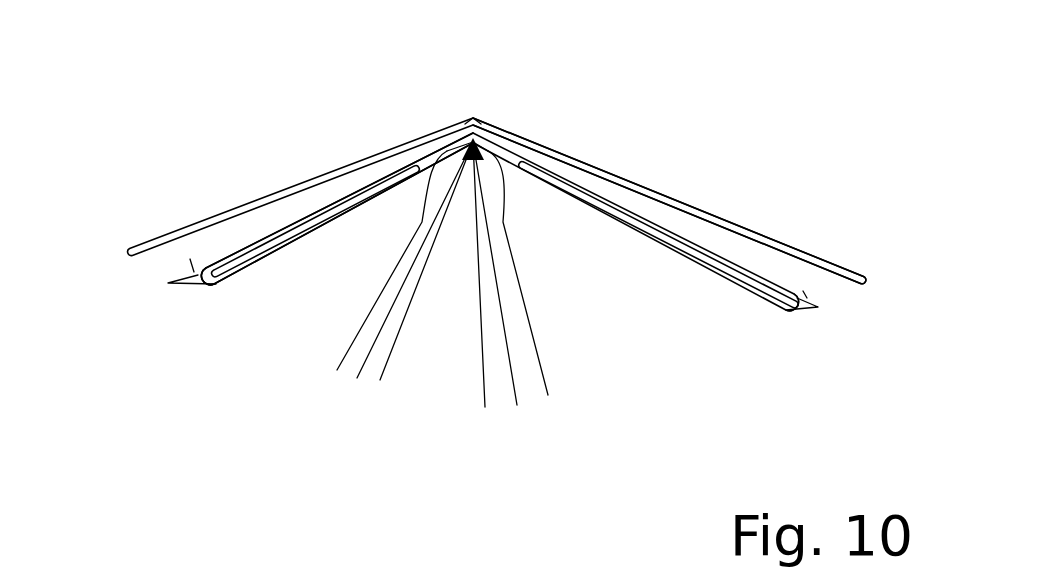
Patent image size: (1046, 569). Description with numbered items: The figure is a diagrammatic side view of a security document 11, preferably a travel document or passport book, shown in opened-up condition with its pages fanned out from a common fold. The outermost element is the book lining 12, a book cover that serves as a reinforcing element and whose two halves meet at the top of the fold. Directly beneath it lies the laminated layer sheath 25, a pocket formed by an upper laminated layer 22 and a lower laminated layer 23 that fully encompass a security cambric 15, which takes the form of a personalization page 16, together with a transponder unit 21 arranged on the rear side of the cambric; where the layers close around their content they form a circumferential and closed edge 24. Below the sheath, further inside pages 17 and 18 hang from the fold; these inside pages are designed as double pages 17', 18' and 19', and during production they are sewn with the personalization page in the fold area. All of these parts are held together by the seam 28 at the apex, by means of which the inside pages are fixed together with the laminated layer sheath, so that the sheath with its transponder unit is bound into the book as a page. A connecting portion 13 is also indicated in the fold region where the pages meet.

The security document 11 is at (327, 142).
The book lining 12 is at (765, 237).
The connecting portion 13 is at (380, 380).
The security cambric 15 is at (247, 298).
The personalization page 16 is at (257, 257).
The inside page 17 is at (351, 293).
The inside page 18 is at (392, 309).
The double page 17' is at (480, 320).
The double page 18' is at (525, 315).
The double page 19' is at (577, 294).
The transponder unit 21 is at (778, 312).
The upper laminated layer 22 is at (213, 285).
The lower laminated layer 23 is at (187, 274).
The circumferential closed edge 24 is at (160, 293).
The laminated layer sheath 25 is at (815, 308).
The seam 28 is at (472, 116).